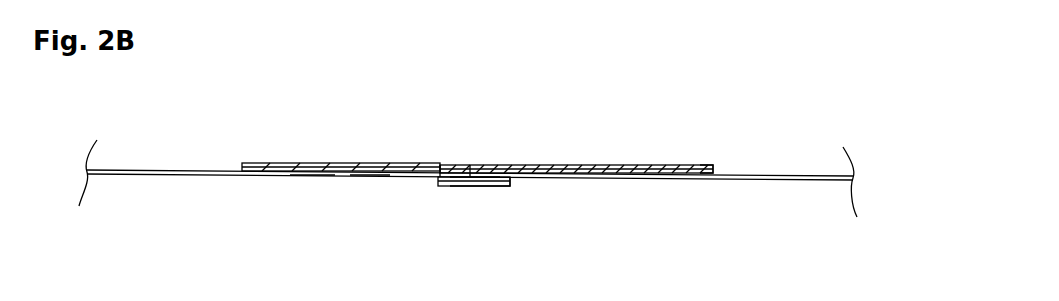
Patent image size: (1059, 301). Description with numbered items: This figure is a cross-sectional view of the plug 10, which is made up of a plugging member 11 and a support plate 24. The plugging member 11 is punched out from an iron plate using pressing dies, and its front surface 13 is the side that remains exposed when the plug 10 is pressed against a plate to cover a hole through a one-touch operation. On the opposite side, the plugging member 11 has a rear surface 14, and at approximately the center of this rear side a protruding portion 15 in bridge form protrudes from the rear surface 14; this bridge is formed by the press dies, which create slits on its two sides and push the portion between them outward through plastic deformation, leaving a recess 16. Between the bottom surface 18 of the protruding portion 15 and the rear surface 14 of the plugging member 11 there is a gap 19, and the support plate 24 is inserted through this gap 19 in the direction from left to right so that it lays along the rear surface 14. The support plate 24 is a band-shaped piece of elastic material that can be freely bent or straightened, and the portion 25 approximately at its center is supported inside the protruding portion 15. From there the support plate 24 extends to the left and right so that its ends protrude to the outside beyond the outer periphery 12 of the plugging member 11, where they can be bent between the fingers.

The plug 10 is at (625, 151).
The plugging member 11 is at (570, 165).
The outer periphery 12 is at (712, 172).
The surface 13 is at (313, 163).
The rear surface 14 is at (311, 177).
The protruding portion 15 is at (485, 186).
The recess 16 is at (468, 165).
The bottom surface 18 is at (368, 177).
The gap 19 is at (510, 180).
The support plate 24 is at (174, 170).
The portion approximately at the center of the support plate 25 is at (446, 186).